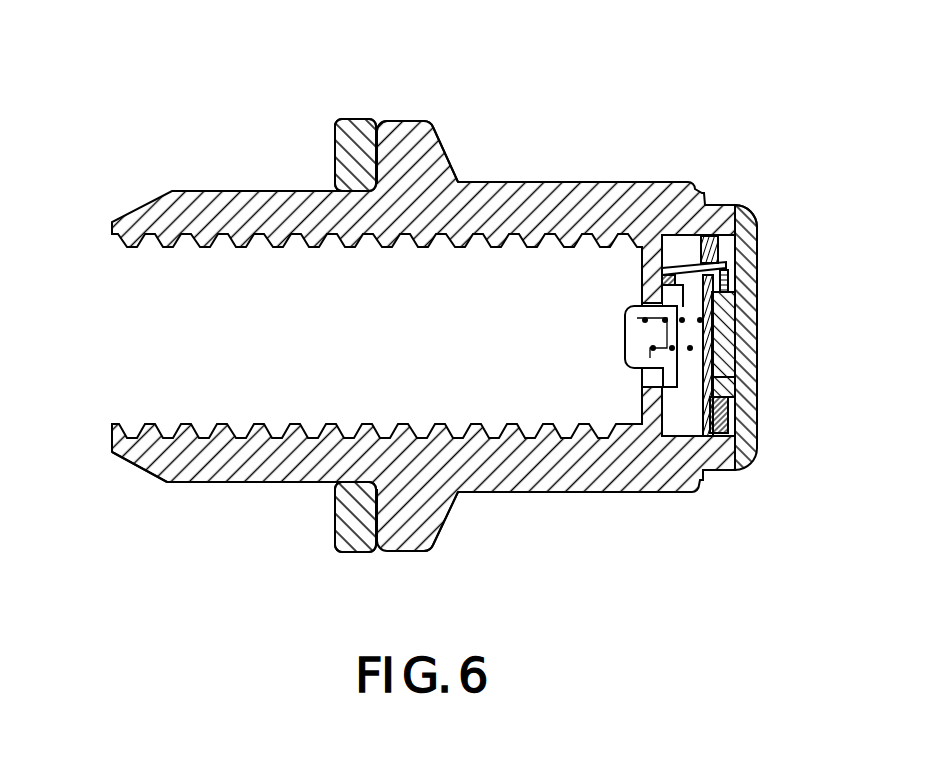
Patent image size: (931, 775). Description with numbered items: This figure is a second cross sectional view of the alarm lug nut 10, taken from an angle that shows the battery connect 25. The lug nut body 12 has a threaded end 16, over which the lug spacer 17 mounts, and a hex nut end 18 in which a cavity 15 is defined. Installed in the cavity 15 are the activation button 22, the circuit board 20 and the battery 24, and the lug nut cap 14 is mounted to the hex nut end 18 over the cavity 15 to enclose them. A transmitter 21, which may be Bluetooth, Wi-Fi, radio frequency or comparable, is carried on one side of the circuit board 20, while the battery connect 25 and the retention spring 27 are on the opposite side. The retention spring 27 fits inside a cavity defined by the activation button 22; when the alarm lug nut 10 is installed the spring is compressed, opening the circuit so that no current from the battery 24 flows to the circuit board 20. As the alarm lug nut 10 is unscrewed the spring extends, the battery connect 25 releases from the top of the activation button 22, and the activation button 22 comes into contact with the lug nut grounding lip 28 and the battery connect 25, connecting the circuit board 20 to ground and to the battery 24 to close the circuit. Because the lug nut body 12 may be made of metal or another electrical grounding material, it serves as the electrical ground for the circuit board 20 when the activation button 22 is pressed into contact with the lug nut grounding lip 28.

The alarm lug nut 10 is at (134, 62).
The lug nut body 12 is at (252, 191).
The lug nut cap 14 is at (757, 285).
The cavity 15 is at (681, 420).
The threaded end 16 is at (110, 491).
The lug spacer 17 is at (337, 135).
The hex nut end 18 is at (488, 182).
The circuit board 20 is at (752, 230).
The transmitter 21 is at (730, 415).
The activation button 22 is at (634, 305).
The battery 24 is at (730, 326).
The battery connect 25 is at (680, 250).
The retention spring 27 is at (643, 322).
The lug nut grounding lip 28 is at (643, 393).